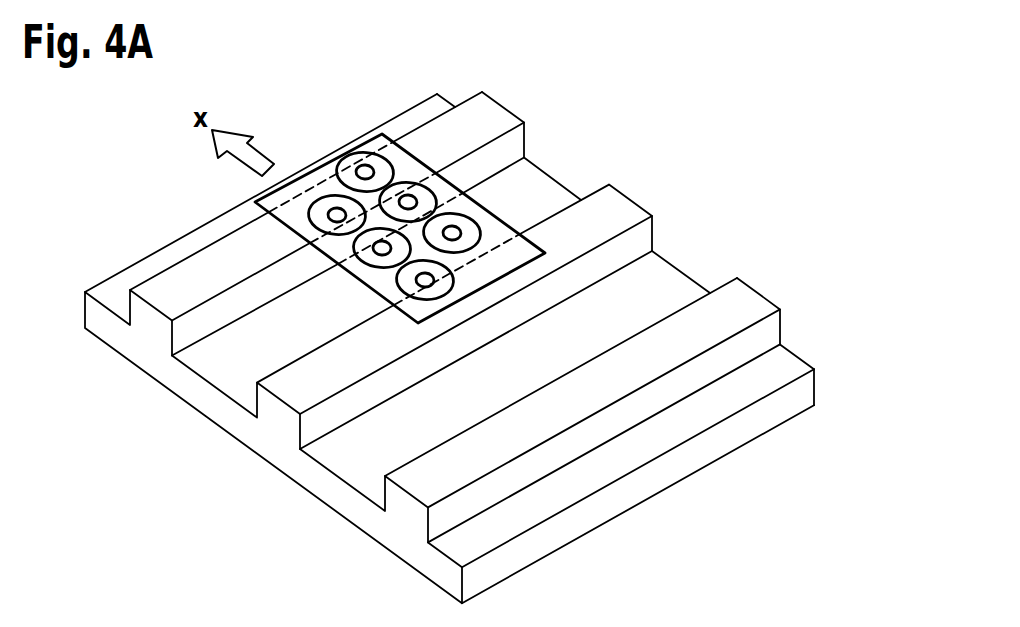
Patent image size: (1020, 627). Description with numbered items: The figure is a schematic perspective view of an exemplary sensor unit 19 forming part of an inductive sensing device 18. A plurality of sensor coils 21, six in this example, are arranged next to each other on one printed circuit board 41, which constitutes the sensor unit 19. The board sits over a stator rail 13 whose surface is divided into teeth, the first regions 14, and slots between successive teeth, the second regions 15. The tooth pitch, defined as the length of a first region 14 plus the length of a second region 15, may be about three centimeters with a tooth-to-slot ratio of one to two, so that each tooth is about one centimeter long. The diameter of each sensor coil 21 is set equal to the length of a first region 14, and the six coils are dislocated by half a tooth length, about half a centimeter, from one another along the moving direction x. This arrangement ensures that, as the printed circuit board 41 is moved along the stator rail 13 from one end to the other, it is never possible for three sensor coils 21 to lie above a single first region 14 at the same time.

The stator rail 13 is at (673, 468).
The first region 14 is at (782, 325).
The second region 15 is at (678, 268).
The inductive sensing device 18 is at (467, 346).
The sensor unit 19 is at (467, 346).
The sensor coil 21 is at (322, 208).
The printed circuit board 41 is at (328, 199).